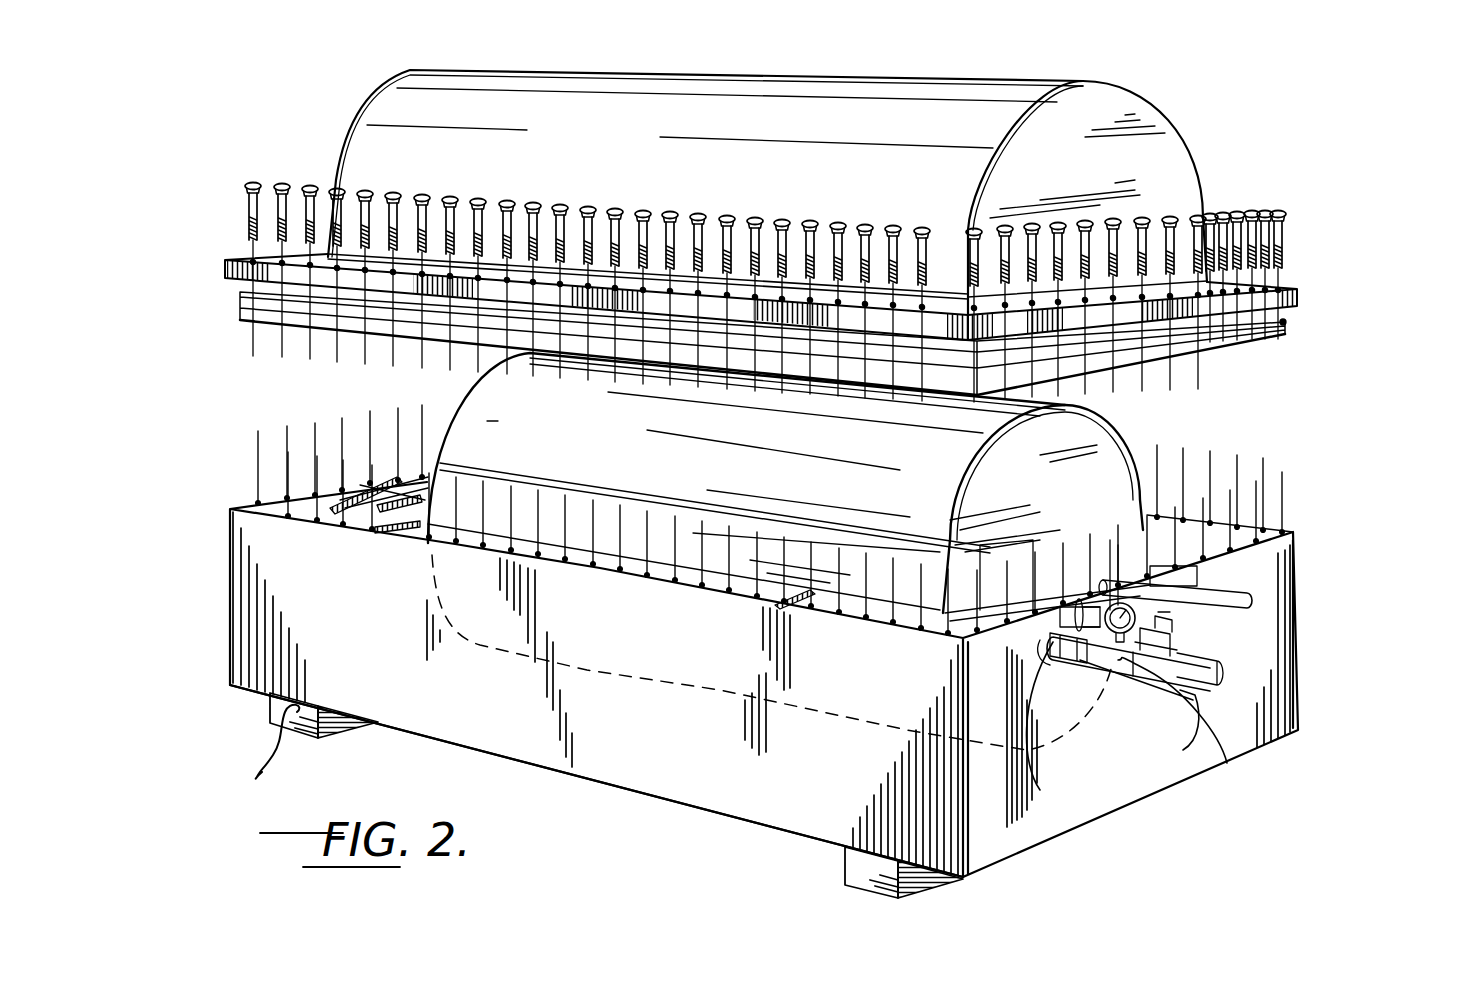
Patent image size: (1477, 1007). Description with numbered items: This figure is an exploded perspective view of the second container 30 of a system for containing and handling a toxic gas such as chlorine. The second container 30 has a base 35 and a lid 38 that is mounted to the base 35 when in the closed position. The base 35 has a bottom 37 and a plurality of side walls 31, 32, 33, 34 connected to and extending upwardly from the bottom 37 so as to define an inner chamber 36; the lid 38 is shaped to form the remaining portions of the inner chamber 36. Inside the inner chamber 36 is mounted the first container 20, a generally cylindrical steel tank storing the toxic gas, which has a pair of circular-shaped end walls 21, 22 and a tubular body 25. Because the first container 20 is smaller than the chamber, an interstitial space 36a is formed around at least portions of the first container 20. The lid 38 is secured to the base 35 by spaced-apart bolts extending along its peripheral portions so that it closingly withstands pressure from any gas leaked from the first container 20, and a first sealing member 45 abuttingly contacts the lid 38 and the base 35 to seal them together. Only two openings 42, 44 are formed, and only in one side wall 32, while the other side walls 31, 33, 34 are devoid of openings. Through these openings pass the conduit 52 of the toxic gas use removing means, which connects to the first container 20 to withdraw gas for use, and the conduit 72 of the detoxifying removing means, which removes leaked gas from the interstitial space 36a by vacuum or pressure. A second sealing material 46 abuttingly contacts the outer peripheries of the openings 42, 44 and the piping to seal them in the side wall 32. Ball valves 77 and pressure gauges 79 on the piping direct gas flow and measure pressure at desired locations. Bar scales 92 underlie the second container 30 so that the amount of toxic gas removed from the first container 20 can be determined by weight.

The first container 20 is at (1135, 435).
The end wall 21 is at (460, 400).
The end wall 22 is at (1100, 495).
The tubular body 25 is at (806, 487).
The second container 30 is at (1401, 419).
The side wall 31 is at (340, 491).
The side wall 32 is at (1126, 763).
The side wall 33 is at (362, 638).
The side wall 34 is at (1230, 517).
The base 35 is at (203, 583).
The inner chamber 36 is at (340, 491).
The interstitial space 36a is at (1256, 538).
The bottom 37 is at (590, 772).
The lid 38 is at (876, 78).
The opening 42 is at (1250, 592).
The opening 44 is at (1052, 729).
The first sealing member 45 is at (1283, 322).
The second sealing material 46 is at (1110, 580).
The conduit 52 is at (1175, 635).
The conduit 72 is at (1240, 673).
The ball valve 77 is at (1173, 734).
The pressure gauge 79 is at (1171, 728).
The bar scale 92 is at (343, 722).